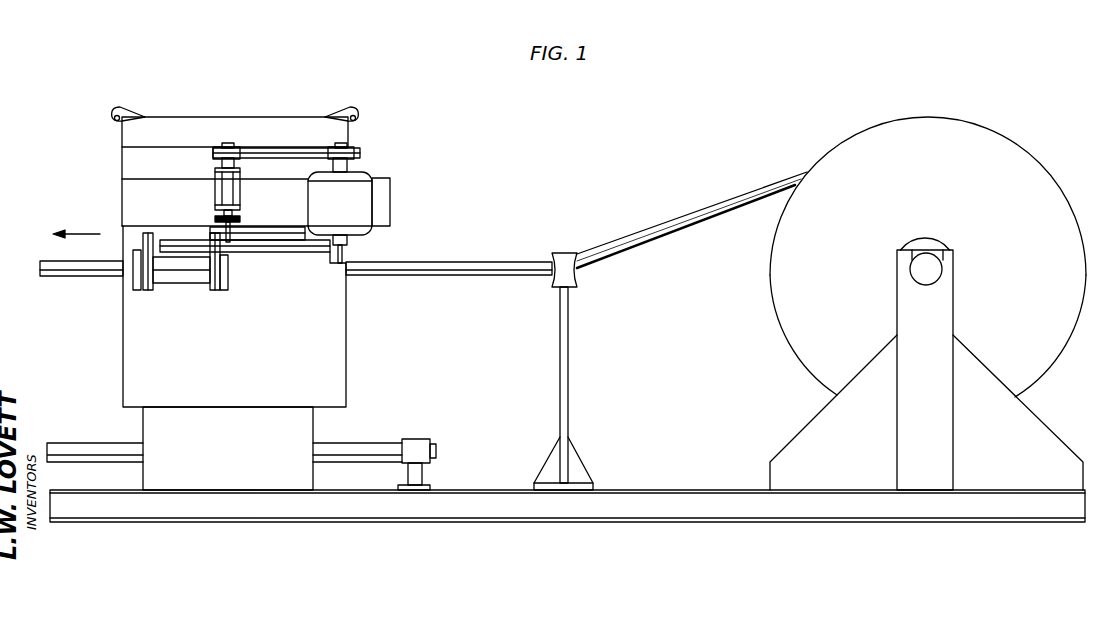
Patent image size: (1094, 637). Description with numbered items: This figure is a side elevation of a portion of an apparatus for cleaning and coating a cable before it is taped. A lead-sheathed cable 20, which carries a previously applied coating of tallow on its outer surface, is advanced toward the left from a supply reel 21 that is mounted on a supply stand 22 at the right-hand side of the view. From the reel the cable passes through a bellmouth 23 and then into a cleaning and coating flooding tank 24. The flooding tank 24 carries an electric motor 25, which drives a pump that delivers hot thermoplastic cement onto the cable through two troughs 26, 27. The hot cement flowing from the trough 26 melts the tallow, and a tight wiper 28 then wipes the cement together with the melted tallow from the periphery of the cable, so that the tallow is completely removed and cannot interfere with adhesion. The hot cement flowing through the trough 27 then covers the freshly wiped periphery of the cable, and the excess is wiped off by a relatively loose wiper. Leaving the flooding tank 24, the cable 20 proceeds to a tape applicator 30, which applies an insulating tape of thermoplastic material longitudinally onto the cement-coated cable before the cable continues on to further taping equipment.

The lead-sheathed cable 20 is at (676, 222).
The supply reel 21 is at (960, 117).
The supply stand 22 is at (900, 317).
The bellmouth 23 is at (570, 252).
The cleaning and coating flooding tank 24 is at (276, 112).
The electric motor 25 is at (370, 185).
The trough 26 is at (255, 242).
The trough 27 is at (183, 246).
The tight wiper 28 is at (228, 290).
The tape applicator 30 is at (160, 292).